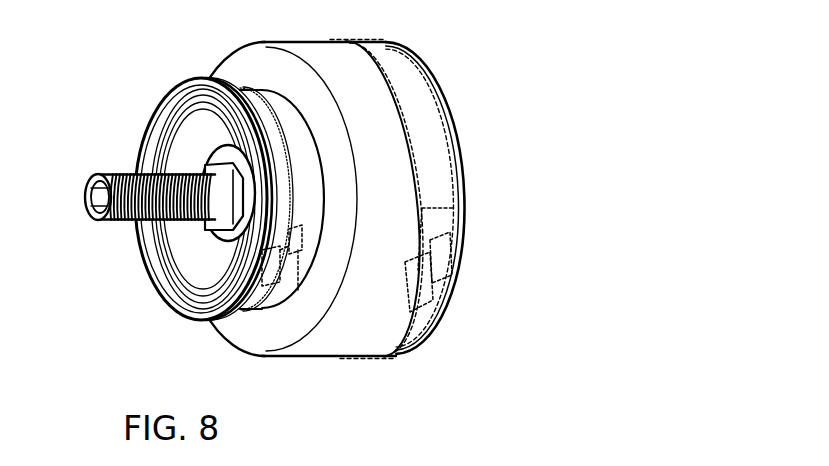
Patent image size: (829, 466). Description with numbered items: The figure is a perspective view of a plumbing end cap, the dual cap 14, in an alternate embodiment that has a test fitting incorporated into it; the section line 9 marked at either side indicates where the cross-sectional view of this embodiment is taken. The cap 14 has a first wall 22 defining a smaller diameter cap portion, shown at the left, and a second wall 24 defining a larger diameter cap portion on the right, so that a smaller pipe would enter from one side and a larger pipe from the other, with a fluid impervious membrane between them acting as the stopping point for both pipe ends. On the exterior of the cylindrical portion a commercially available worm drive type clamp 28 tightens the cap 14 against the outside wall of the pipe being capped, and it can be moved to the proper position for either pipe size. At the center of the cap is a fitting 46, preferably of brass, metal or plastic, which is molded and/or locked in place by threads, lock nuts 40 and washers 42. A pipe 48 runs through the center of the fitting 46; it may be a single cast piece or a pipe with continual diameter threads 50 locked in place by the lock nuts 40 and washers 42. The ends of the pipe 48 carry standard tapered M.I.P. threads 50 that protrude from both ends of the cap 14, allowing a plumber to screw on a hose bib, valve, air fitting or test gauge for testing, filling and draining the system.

The section line 9- 9 is at (6, 156).
The dual cap 14 is at (466, 65).
The first wall 22 is at (205, 78).
The second wall 24 is at (322, 47).
The worm drive type clamp 28 is at (282, 288).
The lock nut 40 is at (205, 170).
The washer 42 is at (218, 145).
The fitting 46 is at (113, 252).
The pipe 48 is at (92, 210).
The threads 50 is at (122, 174).